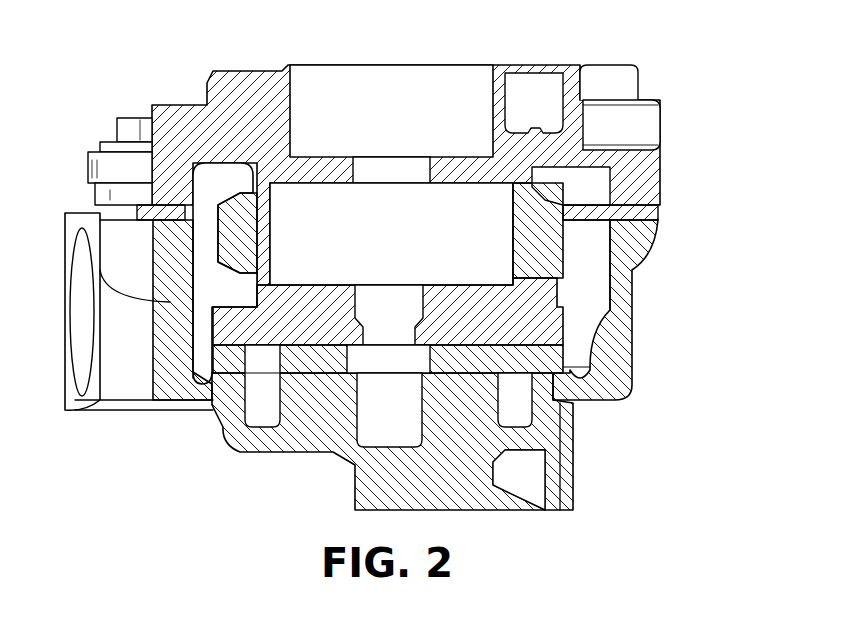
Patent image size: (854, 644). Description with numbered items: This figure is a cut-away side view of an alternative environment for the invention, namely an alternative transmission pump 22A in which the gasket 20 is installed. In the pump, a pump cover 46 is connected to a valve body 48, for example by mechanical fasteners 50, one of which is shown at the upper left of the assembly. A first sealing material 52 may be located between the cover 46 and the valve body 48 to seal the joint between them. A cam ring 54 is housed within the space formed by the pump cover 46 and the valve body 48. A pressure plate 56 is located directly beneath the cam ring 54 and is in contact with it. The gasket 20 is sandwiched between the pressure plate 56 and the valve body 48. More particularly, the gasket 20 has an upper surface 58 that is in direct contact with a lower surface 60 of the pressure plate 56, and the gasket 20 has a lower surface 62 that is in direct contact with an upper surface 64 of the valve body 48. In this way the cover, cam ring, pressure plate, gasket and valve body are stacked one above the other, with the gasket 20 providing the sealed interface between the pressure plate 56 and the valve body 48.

The gasket 20 is at (616, 310).
The alternative transmission pump 22A is at (663, 172).
The pump cover 46 is at (637, 120).
The valve body 48 is at (550, 423).
The mechanical fasteners 50 is at (132, 118).
The first sealing material 52 is at (660, 211).
The cam ring 54 is at (567, 255).
The pressure plate 56 is at (567, 323).
The upper surface 58 is at (500, 345).
The lower surface 60 is at (450, 348).
The lower surface 62 is at (303, 370).
The upper surface 64 is at (437, 362).